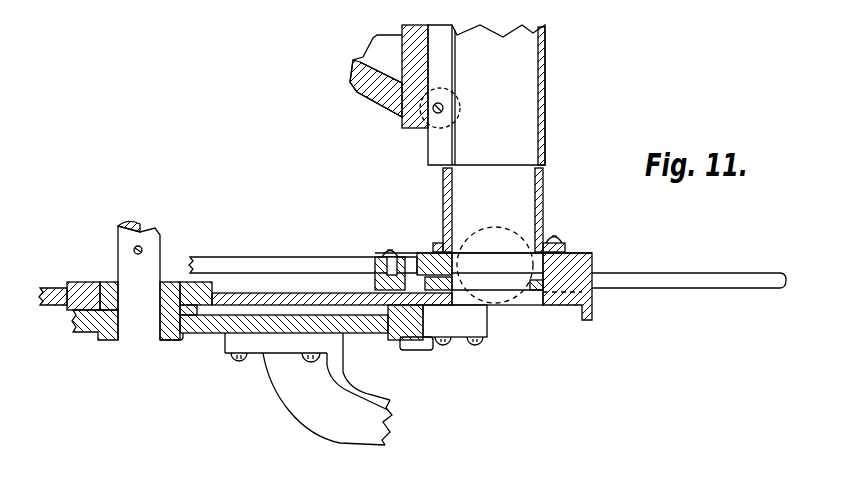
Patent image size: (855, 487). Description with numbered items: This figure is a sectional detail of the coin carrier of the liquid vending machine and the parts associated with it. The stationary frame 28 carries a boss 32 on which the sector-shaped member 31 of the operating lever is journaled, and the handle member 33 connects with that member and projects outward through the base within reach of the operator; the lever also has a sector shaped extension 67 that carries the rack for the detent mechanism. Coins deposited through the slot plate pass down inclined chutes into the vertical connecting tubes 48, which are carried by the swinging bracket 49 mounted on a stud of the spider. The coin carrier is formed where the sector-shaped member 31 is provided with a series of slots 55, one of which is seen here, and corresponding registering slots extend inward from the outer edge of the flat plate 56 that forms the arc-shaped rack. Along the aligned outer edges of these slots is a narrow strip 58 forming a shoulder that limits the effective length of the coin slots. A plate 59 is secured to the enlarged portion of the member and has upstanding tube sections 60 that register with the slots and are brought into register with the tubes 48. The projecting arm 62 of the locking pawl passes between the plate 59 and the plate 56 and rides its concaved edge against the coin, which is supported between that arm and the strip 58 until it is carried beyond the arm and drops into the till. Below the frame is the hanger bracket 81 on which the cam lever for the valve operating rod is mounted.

The frame 28 is at (203, 335).
The sector-shaped member 31 is at (288, 298).
The boss 32 is at (112, 282).
The handle member 33 is at (741, 273).
The vertical connecting tubes 48 is at (545, 100).
The swinging bracket 49 is at (400, 110).
The slots 55 is at (537, 298).
The flat plate 56 is at (476, 273).
The narrow strip 58 is at (532, 292).
The plate 59 is at (566, 251).
The tube sections 60 is at (544, 186).
The projecting arm 62 is at (410, 257).
The sector shaped extension 67 is at (44, 288).
The hanger bracket 81 is at (333, 435).